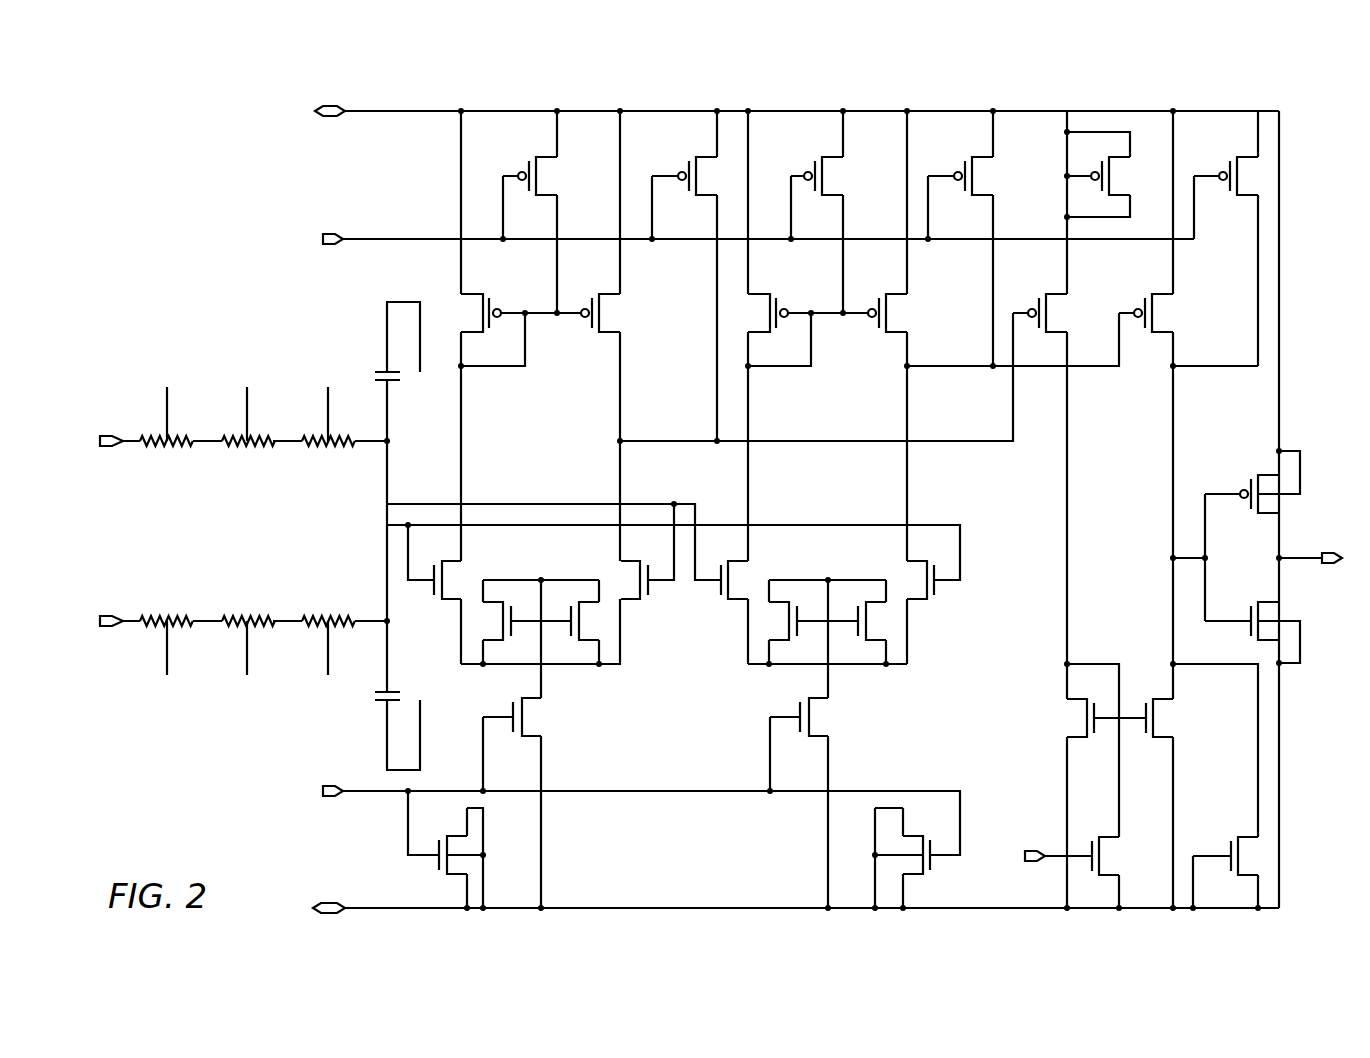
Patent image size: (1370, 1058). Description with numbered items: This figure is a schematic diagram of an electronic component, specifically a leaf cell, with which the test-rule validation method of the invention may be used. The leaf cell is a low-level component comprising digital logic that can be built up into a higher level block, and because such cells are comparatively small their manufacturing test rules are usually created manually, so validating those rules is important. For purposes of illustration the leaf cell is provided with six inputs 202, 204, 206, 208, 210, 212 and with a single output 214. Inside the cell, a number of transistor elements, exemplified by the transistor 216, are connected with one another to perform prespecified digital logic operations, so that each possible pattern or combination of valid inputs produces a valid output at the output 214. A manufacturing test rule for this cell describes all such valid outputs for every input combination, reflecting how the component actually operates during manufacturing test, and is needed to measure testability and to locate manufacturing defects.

The input 202 is at (106, 434).
The input 204 is at (106, 614).
The input 206 is at (325, 106).
The input 208 is at (325, 233).
The input 210 is at (325, 785).
The input 212 is at (328, 902).
The output 214 is at (1331, 566).
The transistor 216 is at (525, 170).